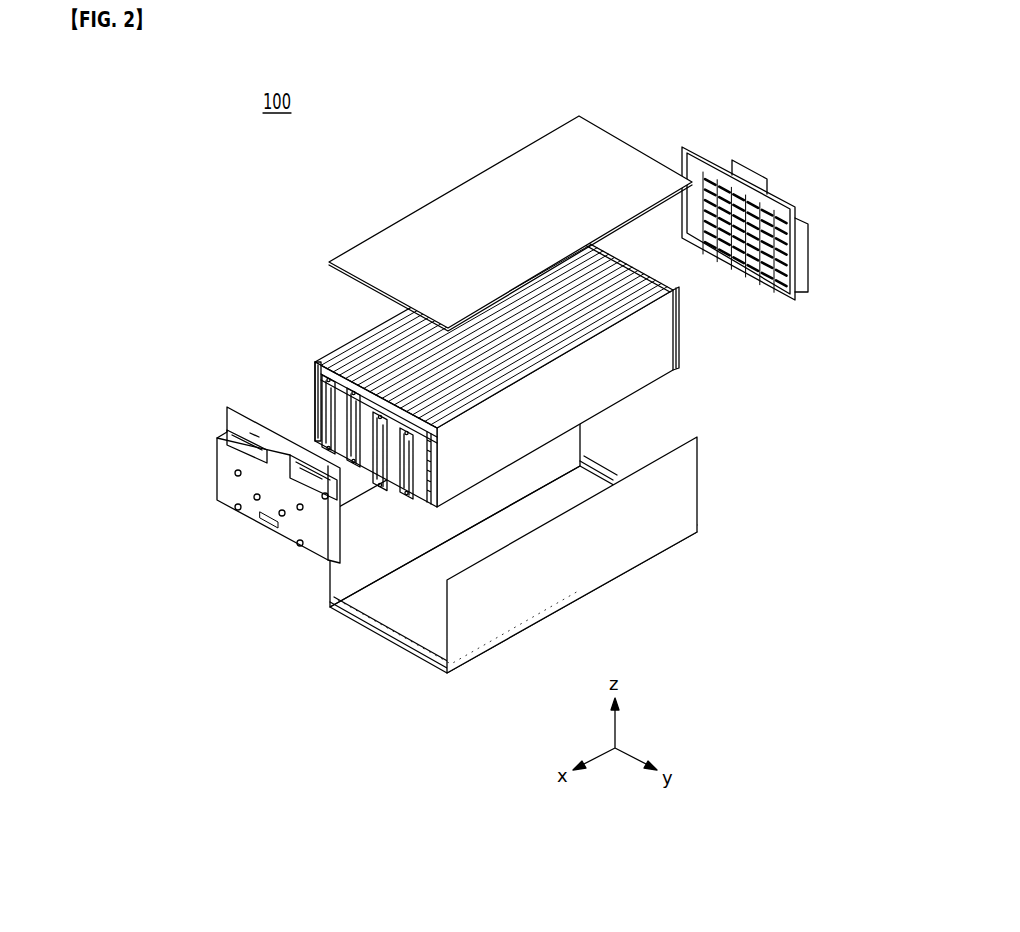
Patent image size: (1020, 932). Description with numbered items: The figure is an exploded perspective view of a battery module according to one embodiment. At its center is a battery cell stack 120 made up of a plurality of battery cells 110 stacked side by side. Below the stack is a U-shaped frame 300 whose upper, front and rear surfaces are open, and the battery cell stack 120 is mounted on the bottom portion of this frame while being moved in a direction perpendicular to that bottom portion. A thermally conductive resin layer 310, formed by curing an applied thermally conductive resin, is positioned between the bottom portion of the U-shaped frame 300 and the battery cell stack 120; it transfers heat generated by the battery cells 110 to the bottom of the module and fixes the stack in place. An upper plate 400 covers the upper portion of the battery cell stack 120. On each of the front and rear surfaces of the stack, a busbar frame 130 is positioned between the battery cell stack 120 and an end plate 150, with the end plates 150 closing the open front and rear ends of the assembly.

The battery cell 110 is at (637, 364).
The battery cell stack 120 is at (380, 352).
The busbar frame 130 is at (313, 400).
The end plate 150 is at (255, 517).
The U-shaped frame 300 is at (597, 560).
The thermally conductive resin layer 310 is at (413, 607).
The upper plate 400 is at (463, 207).